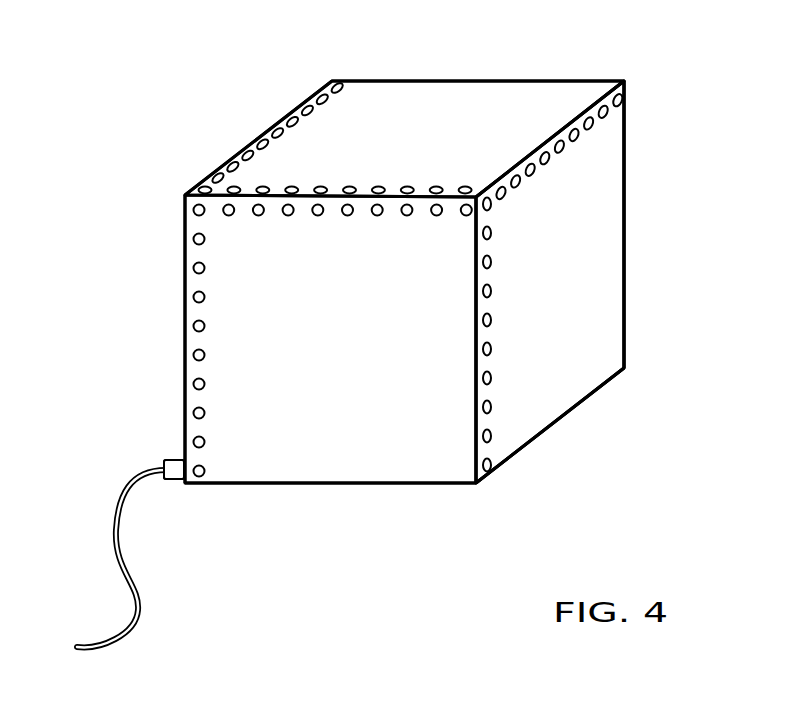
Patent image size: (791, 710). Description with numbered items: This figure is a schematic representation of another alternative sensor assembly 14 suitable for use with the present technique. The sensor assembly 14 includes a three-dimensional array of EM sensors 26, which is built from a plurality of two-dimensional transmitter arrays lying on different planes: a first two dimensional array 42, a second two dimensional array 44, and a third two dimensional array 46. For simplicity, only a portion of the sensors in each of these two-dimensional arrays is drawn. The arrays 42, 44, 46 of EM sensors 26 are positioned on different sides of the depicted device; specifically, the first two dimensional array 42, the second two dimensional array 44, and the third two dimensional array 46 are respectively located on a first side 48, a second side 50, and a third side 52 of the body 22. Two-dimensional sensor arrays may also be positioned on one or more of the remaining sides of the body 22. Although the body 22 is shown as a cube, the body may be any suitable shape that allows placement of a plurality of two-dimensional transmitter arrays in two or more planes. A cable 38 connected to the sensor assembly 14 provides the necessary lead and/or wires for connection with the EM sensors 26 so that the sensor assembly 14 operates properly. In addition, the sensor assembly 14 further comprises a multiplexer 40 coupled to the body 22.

The sensor assembly 14 is at (513, 49).
The body 22 is at (184, 194).
The EM sensors 26 is at (258, 137).
The cable 38 is at (141, 594).
The multiplexer 40 is at (173, 459).
The first two dimensional array 42 is at (633, 247).
The second two dimensional array 44 is at (362, 78).
The third two dimensional array 46 is at (313, 486).
The first side 48 is at (613, 360).
The second side 50 is at (601, 85).
The third side 52 is at (438, 476).